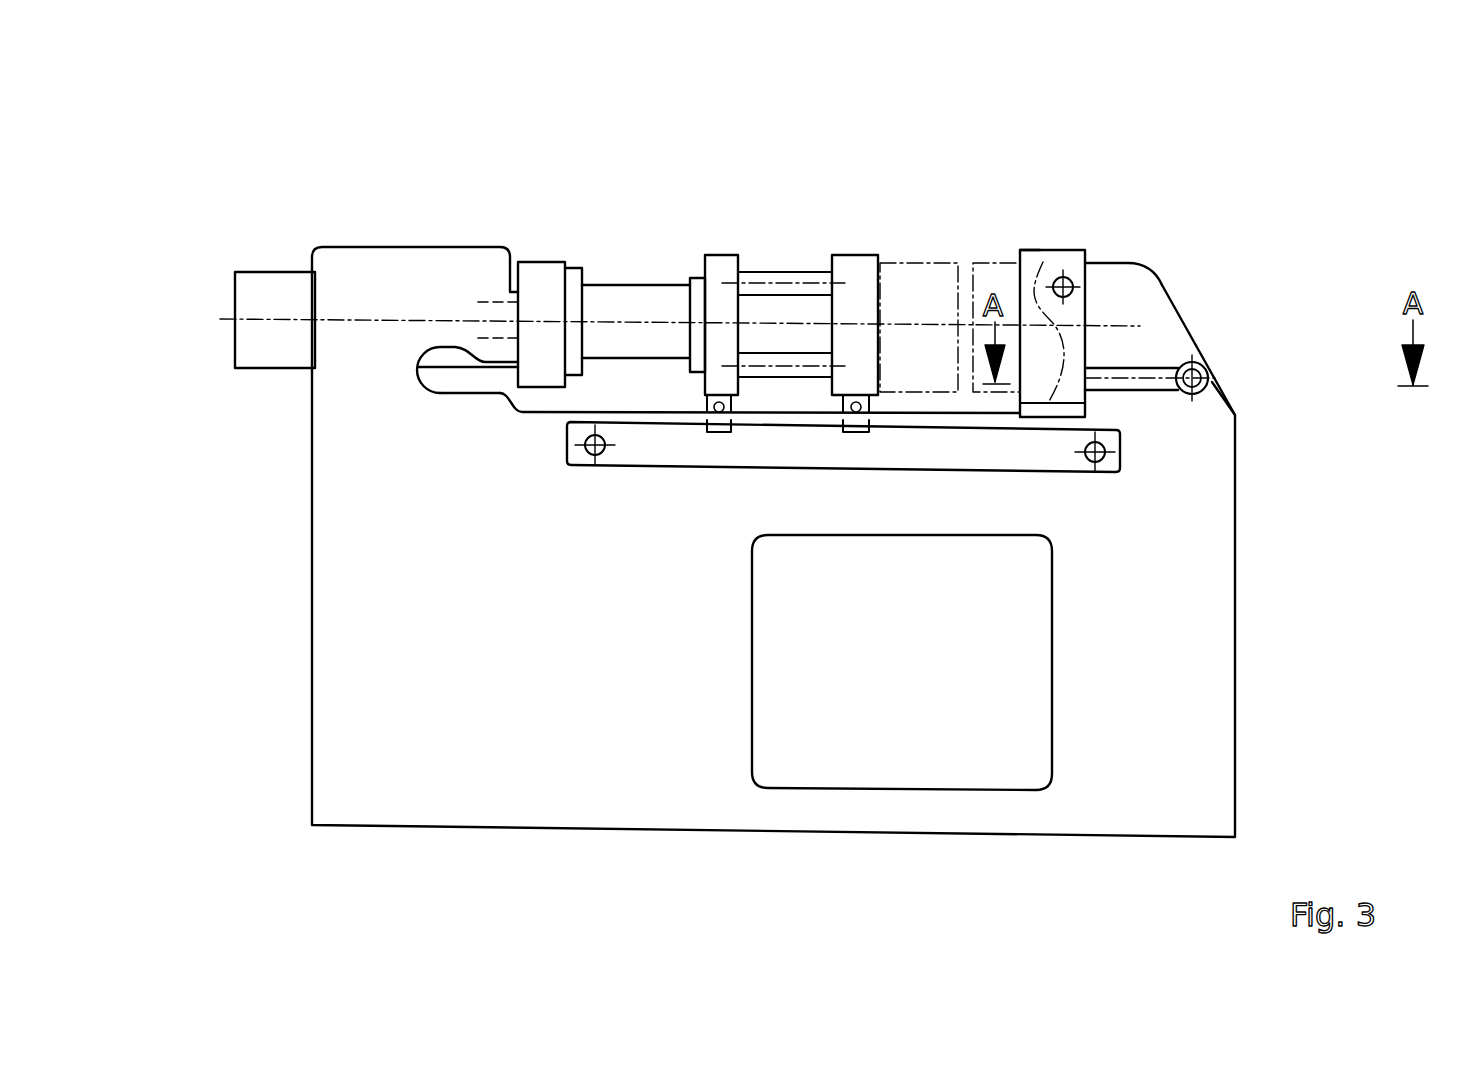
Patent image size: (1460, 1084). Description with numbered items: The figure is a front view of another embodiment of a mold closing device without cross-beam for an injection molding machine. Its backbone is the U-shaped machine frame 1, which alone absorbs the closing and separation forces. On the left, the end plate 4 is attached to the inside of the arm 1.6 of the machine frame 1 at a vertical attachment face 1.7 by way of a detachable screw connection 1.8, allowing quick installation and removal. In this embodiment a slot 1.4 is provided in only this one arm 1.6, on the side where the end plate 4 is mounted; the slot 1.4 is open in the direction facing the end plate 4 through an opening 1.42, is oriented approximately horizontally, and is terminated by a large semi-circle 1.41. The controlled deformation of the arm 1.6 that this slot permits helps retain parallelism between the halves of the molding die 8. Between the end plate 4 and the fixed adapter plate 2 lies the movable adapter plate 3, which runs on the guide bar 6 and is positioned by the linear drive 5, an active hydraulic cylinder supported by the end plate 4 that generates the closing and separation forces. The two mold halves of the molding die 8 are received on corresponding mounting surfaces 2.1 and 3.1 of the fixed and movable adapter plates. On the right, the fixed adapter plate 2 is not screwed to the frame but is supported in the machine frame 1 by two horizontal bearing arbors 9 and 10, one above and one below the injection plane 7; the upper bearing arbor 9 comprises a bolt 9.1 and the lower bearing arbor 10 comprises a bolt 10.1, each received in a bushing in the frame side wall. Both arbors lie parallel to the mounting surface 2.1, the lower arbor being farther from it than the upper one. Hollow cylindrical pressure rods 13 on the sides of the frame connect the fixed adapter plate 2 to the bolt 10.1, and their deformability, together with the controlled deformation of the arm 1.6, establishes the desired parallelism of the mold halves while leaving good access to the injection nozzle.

The U-shaped machine frame 1 is at (1237, 566).
The slot 1.4 is at (440, 395).
The semi-circle 1.41 is at (422, 388).
The opening 1.42 is at (465, 387).
The arm 1.6 is at (345, 265).
The attachment face 1.7 is at (510, 303).
The screw connection 1.8 is at (530, 338).
The fixed adapter plate 2 is at (1052, 250).
The mounting surface 2.1 is at (1020, 257).
The movable adapter plate 3 is at (862, 277).
The mounting surface 3.1 is at (878, 287).
The end plate 4 is at (533, 262).
The linear drive 5 is at (647, 302).
The guide bar 6 is at (687, 453).
The injection plane 7 is at (1132, 327).
The molding die 8 is at (1000, 277).
The upper bearing arbor 9 is at (1093, 262).
The bolt 9.1 is at (1063, 278).
The lower bearing arbor 10 is at (1207, 377).
The bolt 10.1 is at (1212, 382).
The pressure rod 13 is at (1155, 368).